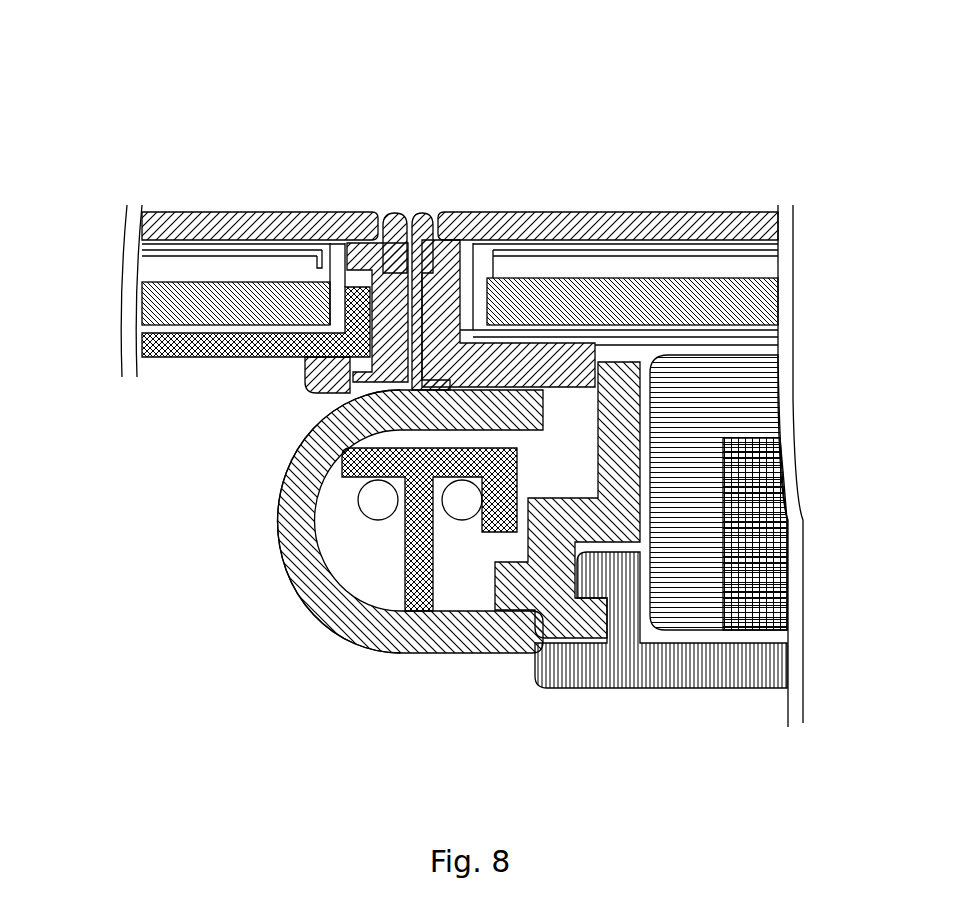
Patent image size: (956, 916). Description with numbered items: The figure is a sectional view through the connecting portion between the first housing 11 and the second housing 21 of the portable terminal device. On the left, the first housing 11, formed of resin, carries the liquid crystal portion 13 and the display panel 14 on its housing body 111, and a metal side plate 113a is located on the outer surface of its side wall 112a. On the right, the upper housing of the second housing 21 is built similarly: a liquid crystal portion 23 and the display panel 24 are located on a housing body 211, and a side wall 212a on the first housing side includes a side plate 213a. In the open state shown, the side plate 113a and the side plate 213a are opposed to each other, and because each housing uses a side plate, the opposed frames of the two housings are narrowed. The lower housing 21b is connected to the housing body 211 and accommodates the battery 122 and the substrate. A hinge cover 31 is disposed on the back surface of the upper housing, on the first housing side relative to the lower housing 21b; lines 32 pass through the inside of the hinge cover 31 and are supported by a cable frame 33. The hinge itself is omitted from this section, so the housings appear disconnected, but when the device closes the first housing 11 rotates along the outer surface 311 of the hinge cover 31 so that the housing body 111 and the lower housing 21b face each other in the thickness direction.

The first housing 11 is at (189, 136).
The liquid crystal portion 13 is at (155, 303).
The display panel 14 is at (252, 212).
The housing body 111 is at (237, 357).
The side wall 112a is at (366, 212).
The side plate 113a is at (394, 212).
The second housing 21 is at (695, 134).
The liquid crystal portion 23 is at (760, 300).
The display panel 24 is at (628, 212).
The housing body 211 is at (768, 337).
The side wall 212a is at (484, 212).
The side plate 213a is at (425, 214).
The lower housing 21b is at (673, 667).
The battery 122 is at (772, 540).
The hinge cover 31 is at (443, 648).
The outer surface 311 is at (287, 570).
The lines 32 is at (376, 511).
The cable frame 33 is at (318, 465).